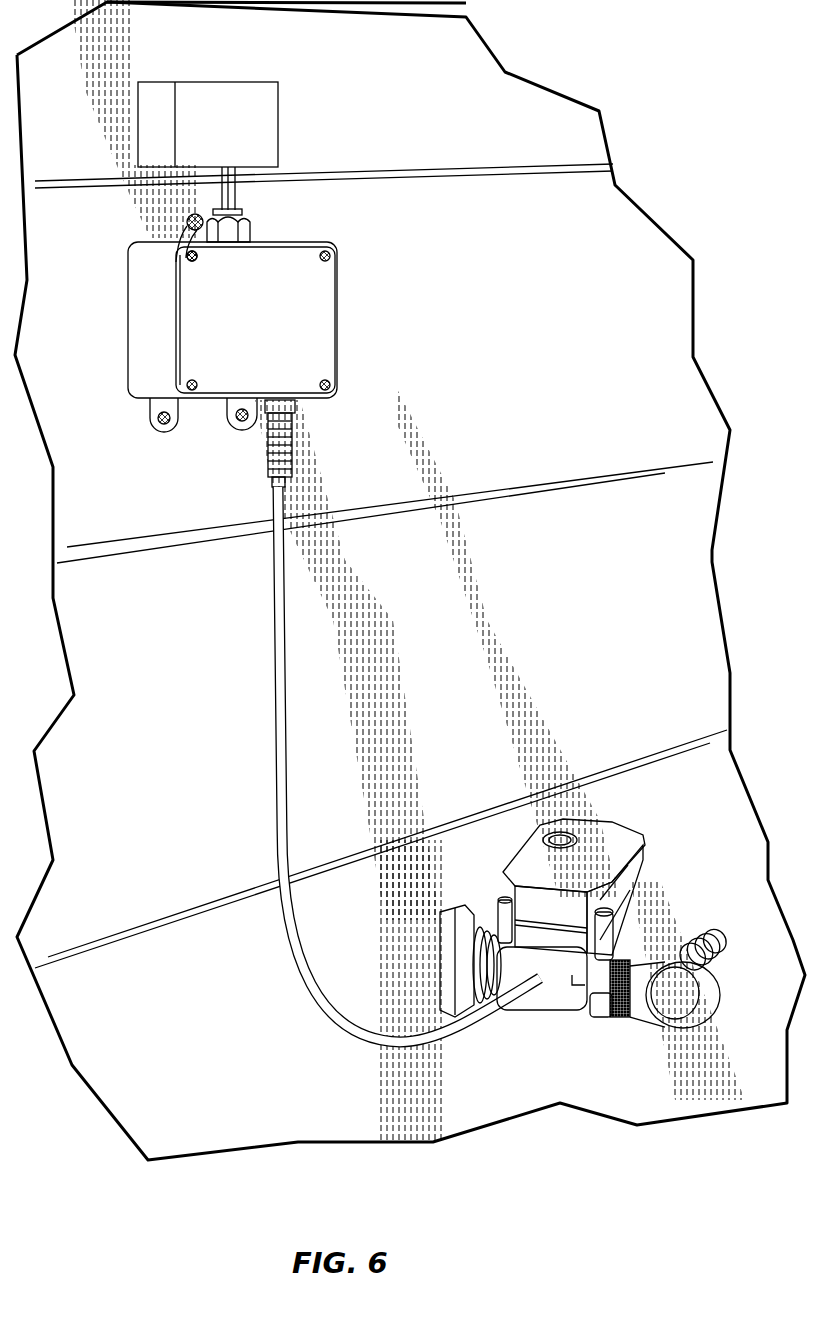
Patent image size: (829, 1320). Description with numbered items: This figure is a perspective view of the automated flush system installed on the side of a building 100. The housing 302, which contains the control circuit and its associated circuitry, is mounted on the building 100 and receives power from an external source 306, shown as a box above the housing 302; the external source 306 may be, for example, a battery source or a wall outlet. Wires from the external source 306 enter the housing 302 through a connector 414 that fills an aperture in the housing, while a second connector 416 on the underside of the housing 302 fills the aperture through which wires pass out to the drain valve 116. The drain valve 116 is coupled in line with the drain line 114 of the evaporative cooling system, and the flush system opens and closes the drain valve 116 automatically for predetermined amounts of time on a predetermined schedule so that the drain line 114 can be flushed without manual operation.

The building 100 is at (650, 277).
The external source 306 is at (267, 140).
The connector 414 is at (245, 227).
The housing 302 is at (338, 295).
The connector 416 is at (290, 447).
The drain valve 116 is at (610, 837).
The drain line 114 is at (545, 998).